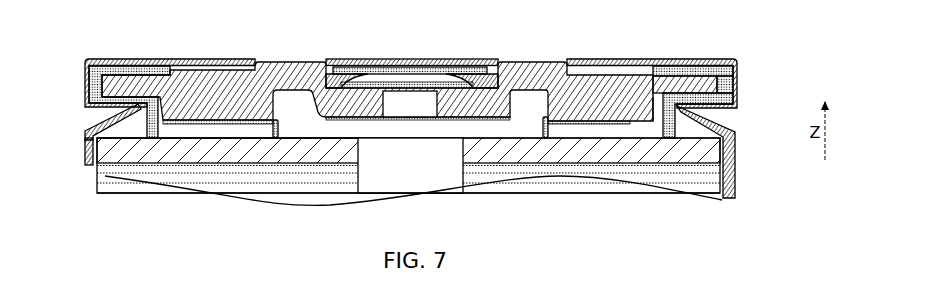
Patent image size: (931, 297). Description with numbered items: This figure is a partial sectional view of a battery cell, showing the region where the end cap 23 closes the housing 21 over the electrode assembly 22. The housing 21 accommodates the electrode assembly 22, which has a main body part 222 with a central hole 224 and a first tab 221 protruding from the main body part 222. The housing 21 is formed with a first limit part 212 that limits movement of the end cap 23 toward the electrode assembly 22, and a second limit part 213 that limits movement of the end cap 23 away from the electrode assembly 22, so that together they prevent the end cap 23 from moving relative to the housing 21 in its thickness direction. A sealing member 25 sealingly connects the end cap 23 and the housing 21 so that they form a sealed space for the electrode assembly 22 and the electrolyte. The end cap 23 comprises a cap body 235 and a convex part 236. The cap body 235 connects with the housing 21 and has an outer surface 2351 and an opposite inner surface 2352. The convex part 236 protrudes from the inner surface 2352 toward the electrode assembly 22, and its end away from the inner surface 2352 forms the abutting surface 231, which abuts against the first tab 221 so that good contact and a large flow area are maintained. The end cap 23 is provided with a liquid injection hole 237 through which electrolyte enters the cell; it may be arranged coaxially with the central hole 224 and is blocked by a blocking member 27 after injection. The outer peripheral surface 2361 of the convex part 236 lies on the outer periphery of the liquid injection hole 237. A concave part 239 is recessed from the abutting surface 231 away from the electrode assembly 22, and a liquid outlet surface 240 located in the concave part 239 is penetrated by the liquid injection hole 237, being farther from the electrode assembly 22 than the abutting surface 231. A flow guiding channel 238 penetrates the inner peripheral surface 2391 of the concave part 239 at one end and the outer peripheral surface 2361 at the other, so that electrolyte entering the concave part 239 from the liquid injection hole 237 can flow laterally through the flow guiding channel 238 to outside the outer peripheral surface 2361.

The housing 21 is at (86, 150).
The first limit part 212 is at (102, 121).
The second limit part 213 is at (128, 58).
The electrode assembly 22 is at (369, 182).
The first tab 221 is at (670, 106).
The main body part 222 is at (200, 144).
The central hole 224 is at (478, 124).
The end cap 23 is at (592, 67).
The abutting surface 231 is at (152, 140).
The cap body 235 is at (692, 78).
The outer surface 2351 is at (698, 67).
The inner surface 2352 is at (702, 98).
The convex part 236 is at (592, 109).
The outer peripheral surface 2361 is at (106, 176).
The liquid injection hole 237 is at (410, 103).
The flow guiding channel 238 is at (240, 118).
The concave part 239 is at (545, 112).
The inner peripheral surface 2391 is at (283, 114).
The liquid outlet surface 240 is at (526, 110).
The sealing member 25 is at (95, 85).
The blocking member 27 is at (428, 75).